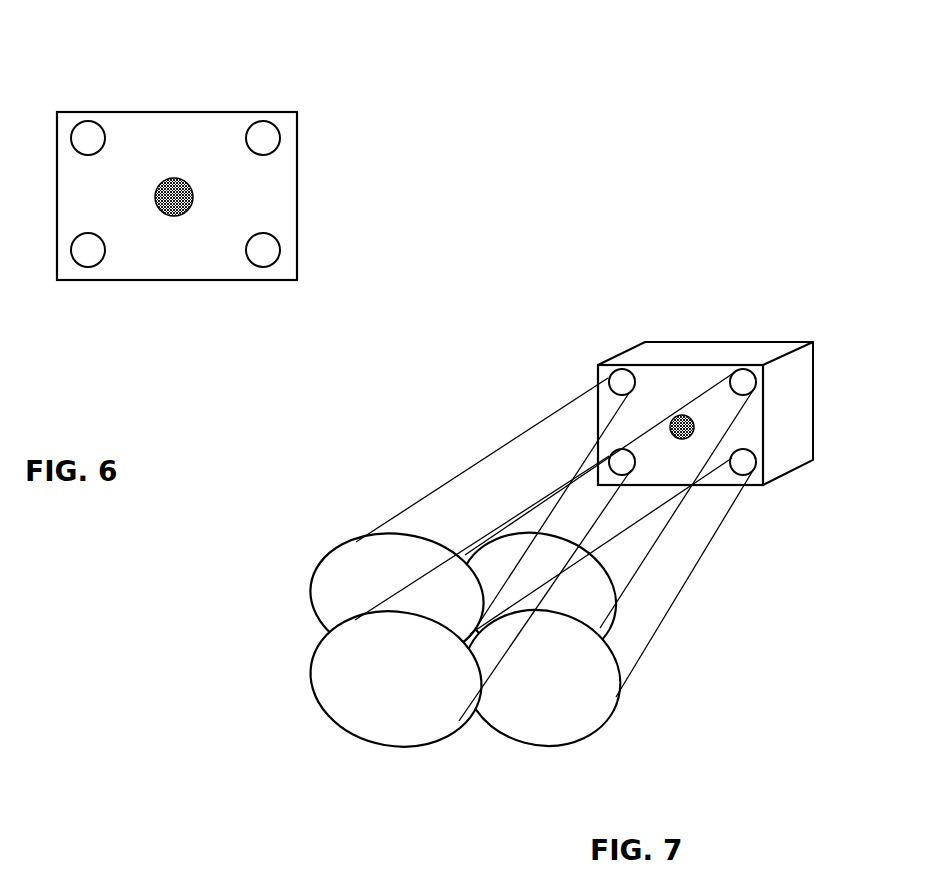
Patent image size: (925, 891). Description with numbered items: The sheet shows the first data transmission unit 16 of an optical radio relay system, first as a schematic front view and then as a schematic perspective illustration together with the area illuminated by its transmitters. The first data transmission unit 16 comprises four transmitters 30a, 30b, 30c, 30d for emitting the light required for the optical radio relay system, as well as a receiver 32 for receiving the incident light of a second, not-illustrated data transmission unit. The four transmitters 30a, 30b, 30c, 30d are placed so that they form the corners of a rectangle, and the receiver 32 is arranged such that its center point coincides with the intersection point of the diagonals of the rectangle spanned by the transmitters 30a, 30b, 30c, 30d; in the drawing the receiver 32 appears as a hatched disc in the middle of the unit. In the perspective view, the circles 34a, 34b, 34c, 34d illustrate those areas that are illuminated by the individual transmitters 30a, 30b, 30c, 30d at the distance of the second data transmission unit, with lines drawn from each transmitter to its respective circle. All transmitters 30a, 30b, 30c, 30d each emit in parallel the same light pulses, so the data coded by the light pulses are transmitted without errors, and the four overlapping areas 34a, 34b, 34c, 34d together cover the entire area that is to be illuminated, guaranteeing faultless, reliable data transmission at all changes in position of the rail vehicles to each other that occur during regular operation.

In FIG. 6, the first data transmission unit 16 is at (329, 91).
In FIG. 7, the first data transmission unit 16 is at (806, 295).
In FIG. 6, the transmitter 30a is at (87, 136).
In FIG. 7, the transmitter 30a is at (622, 380).
In FIG. 6, the transmitter 30b is at (254, 128).
In FIG. 7, the transmitter 30b is at (750, 379).
In FIG. 6, the transmitter 30c is at (267, 252).
In FIG. 7, the transmitter 30c is at (748, 459).
In FIG. 6, the transmitter 30d is at (82, 254).
In FIG. 7, the transmitter 30d is at (618, 461).
In FIG. 6, the receiver 32 is at (169, 184).
In FIG. 7, the receiver 32 is at (690, 418).
In FIG. 7, the circle 34a is at (350, 591).
In FIG. 7, the circle 34b is at (593, 586).
In FIG. 7, the circle 34c is at (558, 718).
In FIG. 7, the circle 34d is at (332, 690).